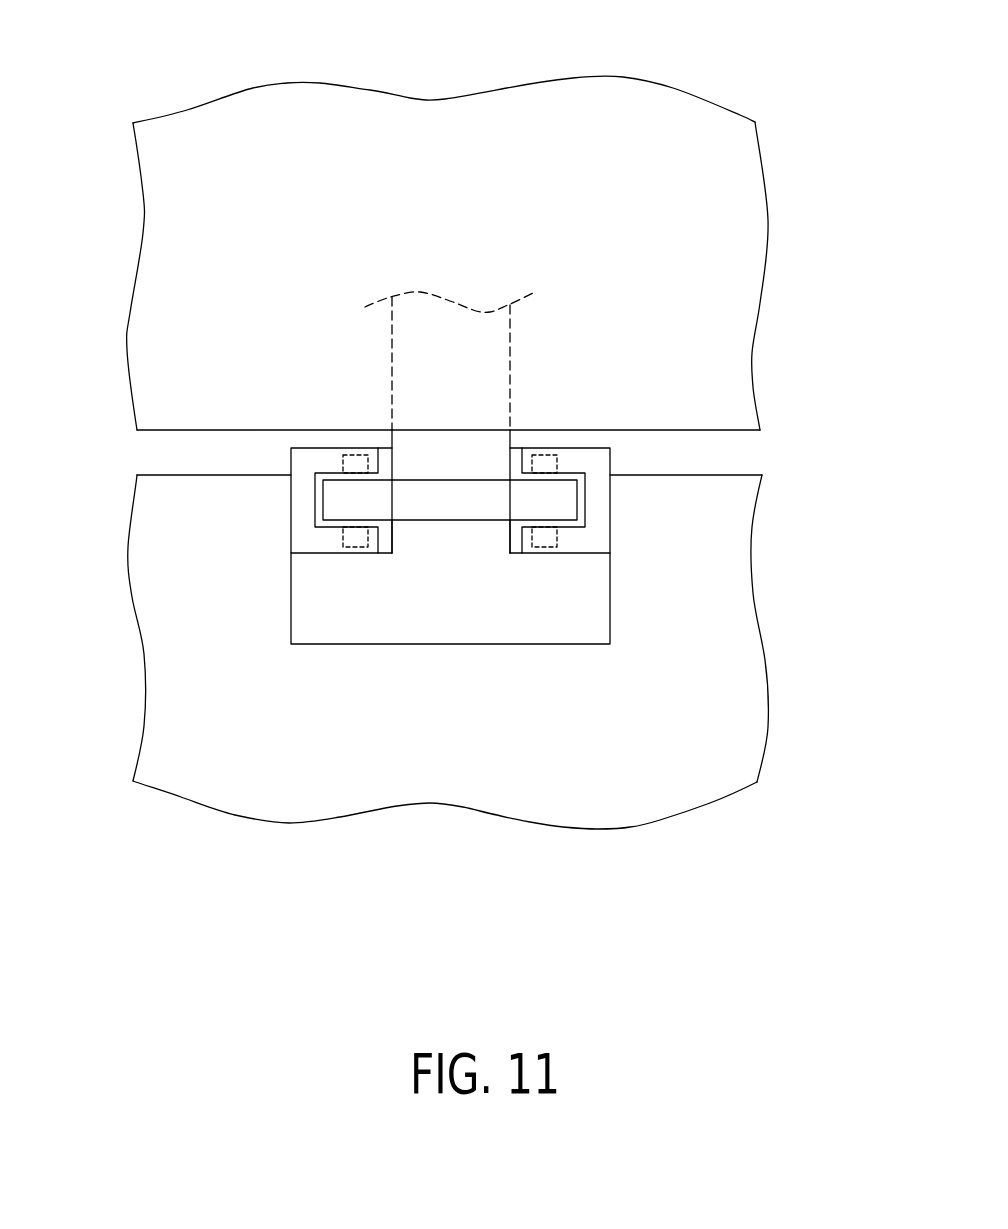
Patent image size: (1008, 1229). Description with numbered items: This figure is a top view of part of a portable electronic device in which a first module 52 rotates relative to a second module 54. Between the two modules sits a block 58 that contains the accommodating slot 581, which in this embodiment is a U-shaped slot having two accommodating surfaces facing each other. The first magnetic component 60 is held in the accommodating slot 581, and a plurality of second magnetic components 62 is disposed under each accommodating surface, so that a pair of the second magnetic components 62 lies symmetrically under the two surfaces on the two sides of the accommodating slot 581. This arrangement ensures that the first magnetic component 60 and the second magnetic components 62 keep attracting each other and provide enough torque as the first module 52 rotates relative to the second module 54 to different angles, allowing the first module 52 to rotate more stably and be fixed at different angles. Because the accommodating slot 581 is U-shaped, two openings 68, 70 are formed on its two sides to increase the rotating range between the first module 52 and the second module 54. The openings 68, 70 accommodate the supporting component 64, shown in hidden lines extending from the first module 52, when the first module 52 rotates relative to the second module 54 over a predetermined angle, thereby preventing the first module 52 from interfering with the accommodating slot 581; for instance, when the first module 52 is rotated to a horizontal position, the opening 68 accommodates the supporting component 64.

The first module 52 is at (697, 120).
The second module 54 is at (520, 793).
The connecting block 58 is at (406, 626).
The accommodating slot 581 is at (582, 488).
The first magnetic component 60 is at (555, 508).
The second magnetic components 62 is at (545, 450).
The supporting component 64 is at (447, 330).
The opening 68 is at (385, 449).
The opening 70 is at (490, 542).